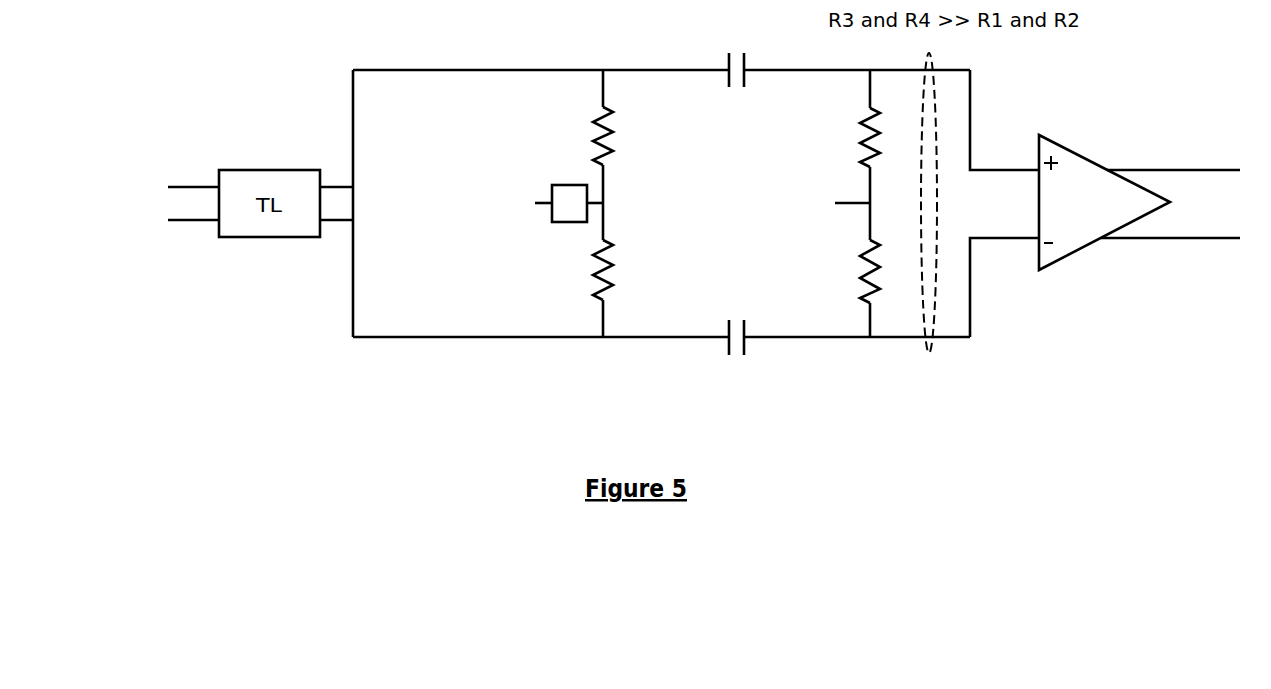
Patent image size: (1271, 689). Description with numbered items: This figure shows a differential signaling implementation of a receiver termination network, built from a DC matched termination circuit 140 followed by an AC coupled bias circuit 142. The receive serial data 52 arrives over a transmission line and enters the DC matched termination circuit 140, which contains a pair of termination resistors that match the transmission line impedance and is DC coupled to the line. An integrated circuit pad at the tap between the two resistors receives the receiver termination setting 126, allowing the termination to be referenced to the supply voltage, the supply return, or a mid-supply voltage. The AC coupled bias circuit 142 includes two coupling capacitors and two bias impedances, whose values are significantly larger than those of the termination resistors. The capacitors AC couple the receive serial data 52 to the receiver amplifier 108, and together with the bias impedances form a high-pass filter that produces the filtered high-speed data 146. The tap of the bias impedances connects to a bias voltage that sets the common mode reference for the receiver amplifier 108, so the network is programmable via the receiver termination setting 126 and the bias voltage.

The receive serial data 52 is at (181, 205).
The receiver termination setting 126 is at (492, 203).
The DC matched termination circuit 140 is at (539, 250).
The AC coupled bias circuit 142 is at (849, 241).
The receiver amplifier 108 is at (1139, 197).
The filtered high-speed data 146 is at (1058, 230).